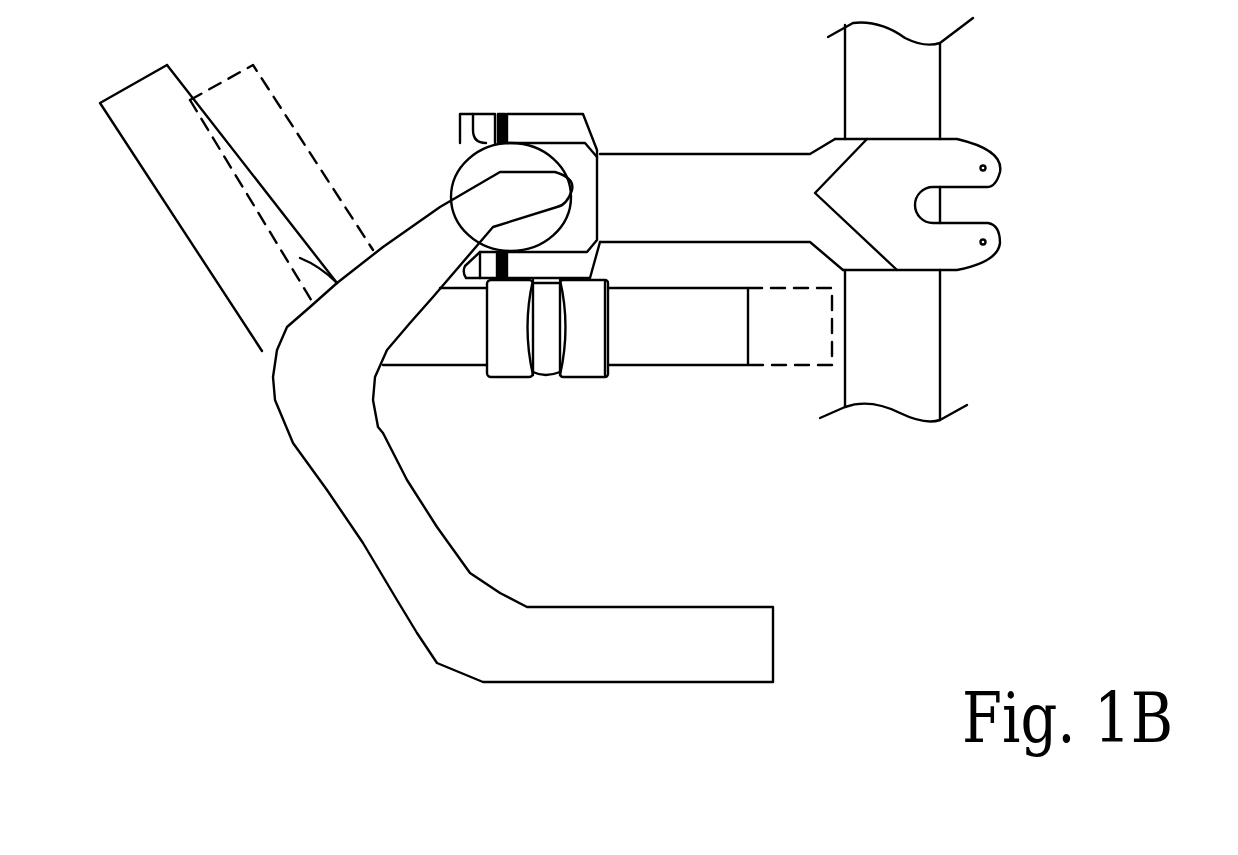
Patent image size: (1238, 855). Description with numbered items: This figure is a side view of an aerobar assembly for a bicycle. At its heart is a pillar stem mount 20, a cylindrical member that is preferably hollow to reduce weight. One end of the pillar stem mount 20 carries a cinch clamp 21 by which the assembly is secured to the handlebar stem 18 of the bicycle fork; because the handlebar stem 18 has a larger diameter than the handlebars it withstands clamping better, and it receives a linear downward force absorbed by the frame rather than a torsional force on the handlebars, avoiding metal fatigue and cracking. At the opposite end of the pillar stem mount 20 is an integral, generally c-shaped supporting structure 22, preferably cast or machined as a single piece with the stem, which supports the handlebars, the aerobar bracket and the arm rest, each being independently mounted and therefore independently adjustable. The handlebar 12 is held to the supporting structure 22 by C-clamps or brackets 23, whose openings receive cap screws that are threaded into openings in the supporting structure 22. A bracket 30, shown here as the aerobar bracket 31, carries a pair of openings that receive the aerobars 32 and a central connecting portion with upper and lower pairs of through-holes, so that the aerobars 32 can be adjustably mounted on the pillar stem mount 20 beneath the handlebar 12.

The handlebar 12 is at (432, 638).
The handlebar stem 18 is at (918, 322).
The pillar stem mount 20 is at (708, 150).
The cinch clamp 21 is at (957, 140).
The c-shaped supporting structure 22 is at (553, 123).
The C-clamps or brackets 23 is at (440, 163).
The bracket 30 is at (582, 390).
The aerobar bracket 31 is at (513, 370).
The aerobars 32 is at (187, 232).